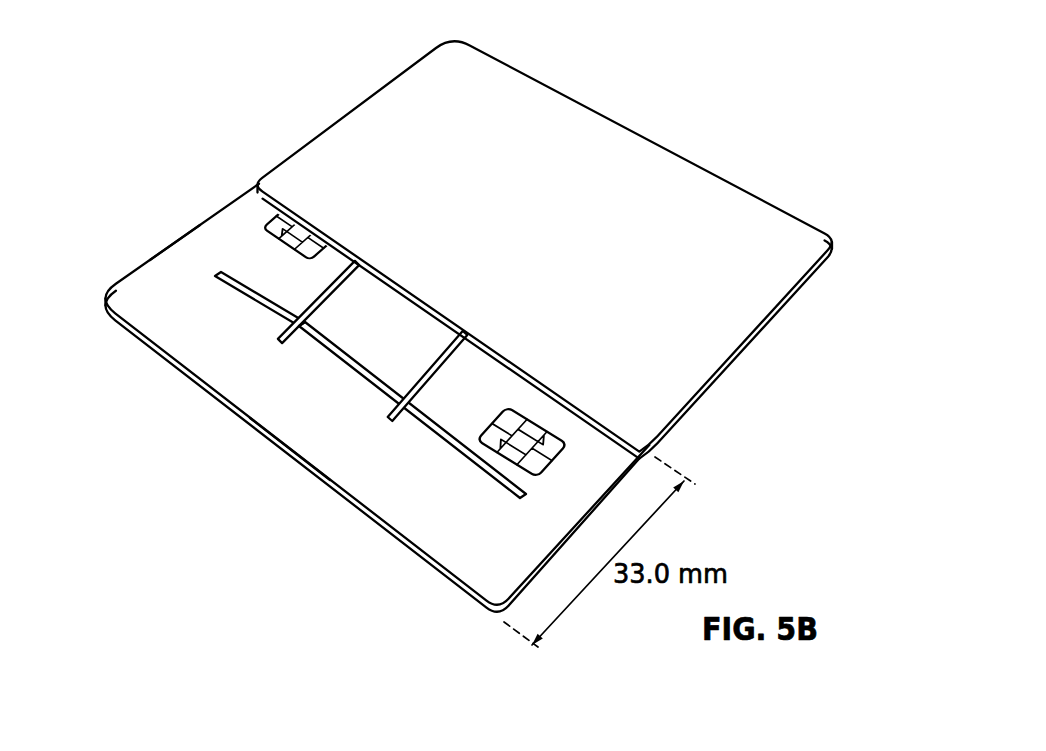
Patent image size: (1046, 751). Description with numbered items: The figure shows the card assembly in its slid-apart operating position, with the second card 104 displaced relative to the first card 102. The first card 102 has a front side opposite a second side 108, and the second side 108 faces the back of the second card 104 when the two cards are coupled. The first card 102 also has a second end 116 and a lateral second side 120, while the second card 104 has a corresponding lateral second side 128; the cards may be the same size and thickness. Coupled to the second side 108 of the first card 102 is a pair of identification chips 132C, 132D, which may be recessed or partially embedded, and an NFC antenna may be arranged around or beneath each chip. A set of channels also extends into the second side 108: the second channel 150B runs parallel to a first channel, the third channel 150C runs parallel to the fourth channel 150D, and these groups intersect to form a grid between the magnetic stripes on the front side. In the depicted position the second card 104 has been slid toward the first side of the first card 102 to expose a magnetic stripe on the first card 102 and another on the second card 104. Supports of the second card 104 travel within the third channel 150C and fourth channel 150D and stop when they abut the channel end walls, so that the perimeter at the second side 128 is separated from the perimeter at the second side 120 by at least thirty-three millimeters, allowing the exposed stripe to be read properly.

The first card 102 is at (202, 230).
The second card 104 is at (598, 124).
The second side of the first card 108 is at (290, 438).
The second end of the first card 116 is at (172, 244).
The second side of the first card (lateral edge) 120 is at (388, 534).
The second side of the second card (lateral edge) 128 is at (275, 202).
The identification chip 132C is at (265, 227).
The identification chip 132D is at (550, 432).
The second channel 150B is at (440, 431).
The third channel 150C is at (300, 313).
The fourth channel 150D is at (420, 392).